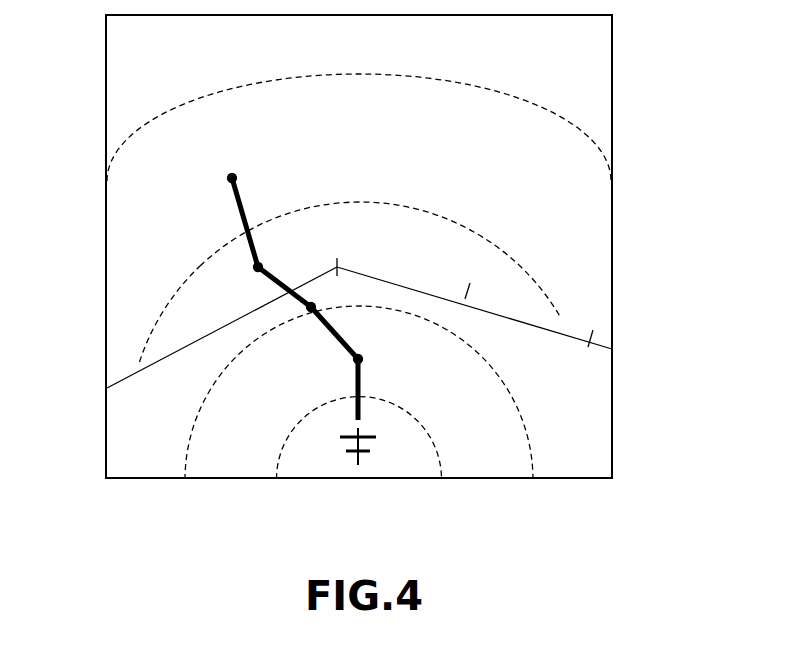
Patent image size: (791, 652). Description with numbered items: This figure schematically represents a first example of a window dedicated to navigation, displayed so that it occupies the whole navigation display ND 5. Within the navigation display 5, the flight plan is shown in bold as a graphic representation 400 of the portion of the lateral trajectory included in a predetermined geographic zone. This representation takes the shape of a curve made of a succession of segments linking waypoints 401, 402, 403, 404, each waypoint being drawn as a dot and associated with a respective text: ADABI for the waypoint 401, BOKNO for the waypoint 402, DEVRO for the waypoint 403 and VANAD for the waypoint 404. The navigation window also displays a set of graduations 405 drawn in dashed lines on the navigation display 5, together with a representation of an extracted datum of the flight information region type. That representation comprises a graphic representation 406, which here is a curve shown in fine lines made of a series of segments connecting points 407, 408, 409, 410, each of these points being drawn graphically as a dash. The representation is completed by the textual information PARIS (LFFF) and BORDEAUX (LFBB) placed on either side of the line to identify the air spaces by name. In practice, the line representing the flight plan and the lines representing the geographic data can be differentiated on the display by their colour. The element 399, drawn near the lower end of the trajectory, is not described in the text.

The navigation display ND 5 is at (106, 88).
The destination airport runway 399 is at (355, 462).
The graphic representation of the lateral trajectory 400 is at (360, 407).
The waypoint ADABI 401 is at (355, 360).
The waypoint BOKNO 402 is at (311, 307).
The waypoint DEVRO 403 is at (258, 267).
The waypoint VANAD 404 is at (232, 178).
The set of graduations 405 is at (583, 135).
The graphic representation of the flight information region 406 is at (107, 388).
The point of the FIR curve 407 is at (612, 349).
The point of the FIR curve 408 is at (467, 290).
The point of the FIR curve 409 is at (348, 262).
The point of the FIR curve 410 is at (141, 364).